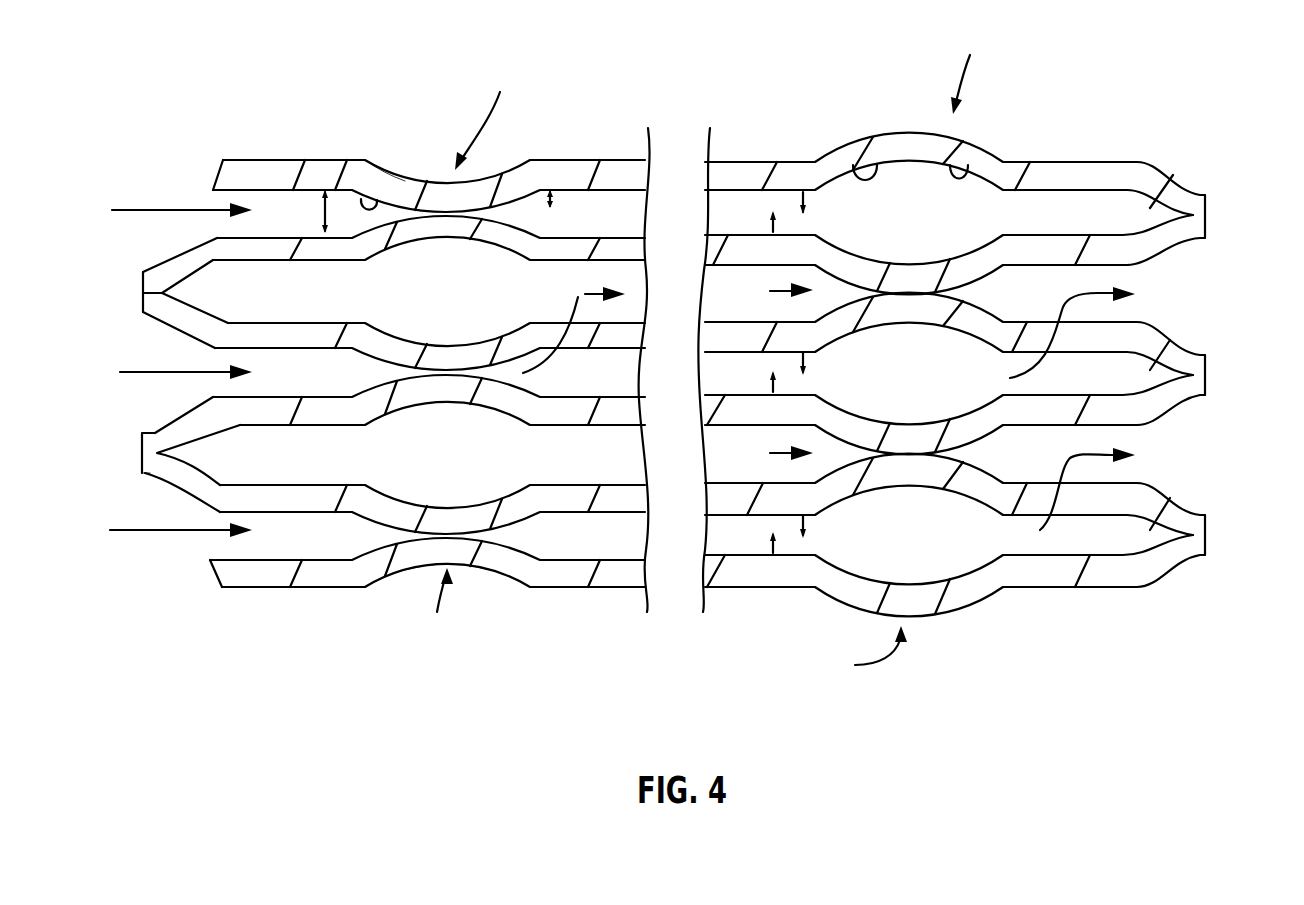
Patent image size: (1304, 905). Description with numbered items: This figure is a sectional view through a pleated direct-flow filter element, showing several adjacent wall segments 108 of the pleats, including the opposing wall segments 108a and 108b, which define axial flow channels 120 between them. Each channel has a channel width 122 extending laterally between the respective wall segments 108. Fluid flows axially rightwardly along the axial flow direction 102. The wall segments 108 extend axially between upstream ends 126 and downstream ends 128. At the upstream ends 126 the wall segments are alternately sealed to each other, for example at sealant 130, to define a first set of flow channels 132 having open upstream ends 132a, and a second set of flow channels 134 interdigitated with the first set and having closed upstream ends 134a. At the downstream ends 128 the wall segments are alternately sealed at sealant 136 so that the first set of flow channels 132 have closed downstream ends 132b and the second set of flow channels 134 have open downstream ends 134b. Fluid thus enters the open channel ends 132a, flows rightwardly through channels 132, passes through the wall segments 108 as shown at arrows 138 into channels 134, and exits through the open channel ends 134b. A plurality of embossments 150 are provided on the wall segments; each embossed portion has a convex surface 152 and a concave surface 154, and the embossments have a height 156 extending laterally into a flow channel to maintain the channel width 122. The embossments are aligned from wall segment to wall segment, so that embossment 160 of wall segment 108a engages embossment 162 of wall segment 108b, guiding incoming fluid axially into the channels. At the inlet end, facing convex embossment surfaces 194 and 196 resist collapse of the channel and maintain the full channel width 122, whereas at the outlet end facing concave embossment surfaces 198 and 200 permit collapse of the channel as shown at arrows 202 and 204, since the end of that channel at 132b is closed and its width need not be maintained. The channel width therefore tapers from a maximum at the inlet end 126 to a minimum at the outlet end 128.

The axial flow direction 102 is at (137, 370).
The wall segments 108 is at (617, 165).
The wall segment 108a is at (637, 577).
The wall segment 108b is at (638, 495).
The axial flow channels 120 is at (320, 457).
The channel width 122 is at (316, 207).
The upstream ends 126 is at (145, 468).
The downstream ends 128 is at (1207, 390).
The sealant 130 is at (143, 445).
The first set of flow channels 132 is at (303, 226).
The open upstream ends 132a is at (213, 200).
The closed downstream ends 132b is at (1150, 208).
The second set of flow channels 134 is at (270, 306).
The closed upstream ends 134a is at (210, 293).
The open downstream ends 134b is at (1120, 277).
The sealant 136 is at (1205, 363).
The arrows 138 is at (585, 294).
The embossments 150 is at (718, 359).
The convex surface 152 is at (920, 132).
The concave surface 154 is at (855, 168).
The height 156 is at (560, 182).
The embossment 160 is at (523, 547).
The embossment 162 is at (523, 523).
The convex embossment surface 194 is at (375, 180).
The convex embossment surface 196 is at (350, 182).
The concave embossment surface 198 is at (983, 165).
The concave embossment surface 200 is at (1000, 178).
The arrows 202 is at (800, 205).
The arrows 204 is at (768, 291).